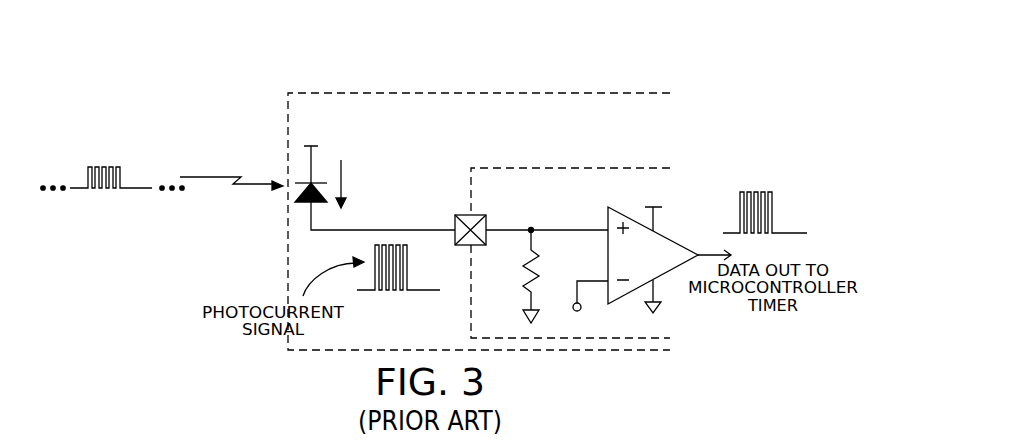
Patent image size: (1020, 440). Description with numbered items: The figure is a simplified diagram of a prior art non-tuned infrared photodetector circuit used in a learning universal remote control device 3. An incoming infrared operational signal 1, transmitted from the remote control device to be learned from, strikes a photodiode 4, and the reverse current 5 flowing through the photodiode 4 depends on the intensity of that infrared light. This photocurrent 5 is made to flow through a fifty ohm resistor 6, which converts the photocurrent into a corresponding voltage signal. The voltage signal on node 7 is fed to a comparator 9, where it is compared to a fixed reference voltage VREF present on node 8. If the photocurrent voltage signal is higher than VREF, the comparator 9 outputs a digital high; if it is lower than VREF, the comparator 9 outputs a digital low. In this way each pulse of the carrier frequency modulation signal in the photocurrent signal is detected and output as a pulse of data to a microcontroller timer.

The operational signal 1 is at (234, 156).
The learning universal remote control device 3 is at (608, 93).
The photodiode 4 is at (317, 181).
The reverse current 5 is at (344, 179).
The resistor 6 is at (521, 276).
The node 7 is at (577, 229).
The node 8 is at (580, 281).
The comparator 9 is at (638, 264).